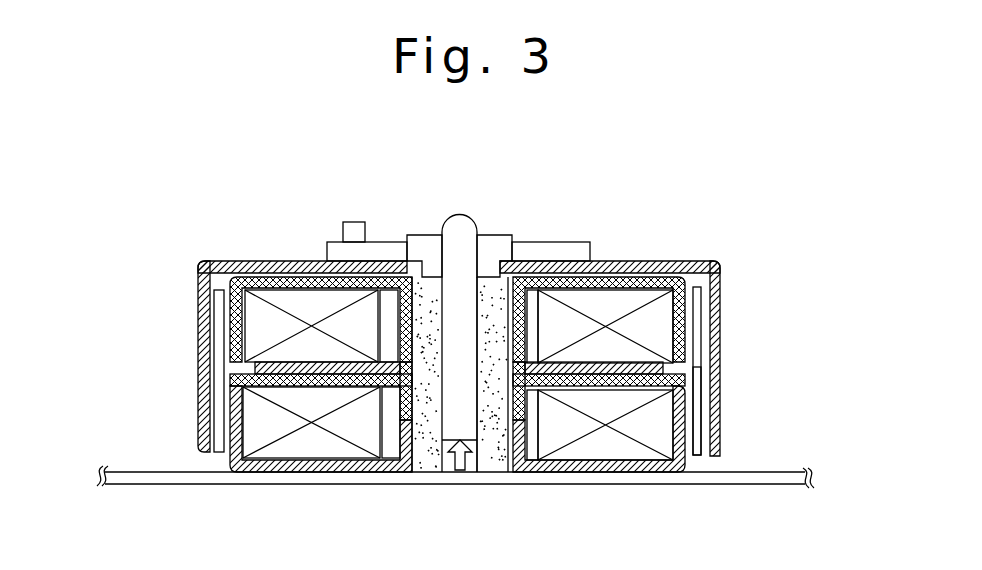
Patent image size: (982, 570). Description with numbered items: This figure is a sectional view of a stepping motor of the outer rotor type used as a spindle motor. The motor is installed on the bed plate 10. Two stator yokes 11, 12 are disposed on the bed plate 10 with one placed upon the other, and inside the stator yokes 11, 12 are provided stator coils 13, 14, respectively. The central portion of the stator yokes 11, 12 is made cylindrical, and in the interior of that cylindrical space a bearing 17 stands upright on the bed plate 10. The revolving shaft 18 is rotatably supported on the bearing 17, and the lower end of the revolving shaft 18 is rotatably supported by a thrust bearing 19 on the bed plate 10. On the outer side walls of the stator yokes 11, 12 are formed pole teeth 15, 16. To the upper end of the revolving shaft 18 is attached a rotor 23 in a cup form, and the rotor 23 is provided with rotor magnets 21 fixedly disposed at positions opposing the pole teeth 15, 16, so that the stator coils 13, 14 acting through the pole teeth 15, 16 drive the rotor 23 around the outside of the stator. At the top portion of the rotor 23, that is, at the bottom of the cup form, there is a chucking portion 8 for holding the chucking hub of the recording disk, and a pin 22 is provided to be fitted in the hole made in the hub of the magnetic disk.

The chucking portion 8 is at (428, 250).
The bed plate 10 is at (775, 483).
The stator yoke 11 is at (727, 455).
The stator yoke 12 is at (727, 266).
The stator coil 13 is at (599, 451).
The stator coil 14 is at (612, 317).
The pole teeth 15 is at (674, 428).
The pole teeth 16 is at (682, 306).
The bearing 17 is at (434, 424).
The revolving shaft 18 is at (463, 238).
The thrust bearing 19 is at (460, 471).
The rotor magnets 21 is at (216, 296).
The pin 22 is at (349, 218).
The rotor 23 is at (268, 266).